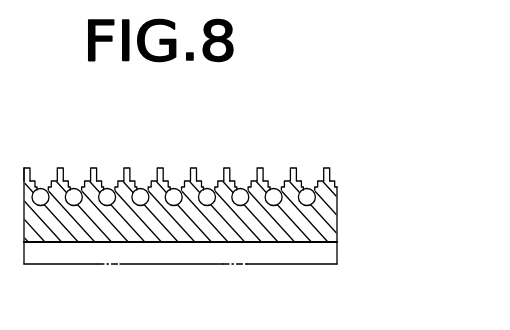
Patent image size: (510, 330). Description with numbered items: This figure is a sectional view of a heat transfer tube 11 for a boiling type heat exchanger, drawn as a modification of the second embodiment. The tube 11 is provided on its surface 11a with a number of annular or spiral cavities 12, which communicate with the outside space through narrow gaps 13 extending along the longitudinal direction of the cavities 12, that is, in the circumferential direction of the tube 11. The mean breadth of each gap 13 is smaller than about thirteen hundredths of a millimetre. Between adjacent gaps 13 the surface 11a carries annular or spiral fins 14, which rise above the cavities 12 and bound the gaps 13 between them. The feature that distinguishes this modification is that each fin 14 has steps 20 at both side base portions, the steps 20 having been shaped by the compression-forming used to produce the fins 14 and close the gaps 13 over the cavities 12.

The heat transfer tube 11 is at (55, 193).
The surface 11a is at (115, 186).
The cavities 12 is at (177, 201).
The narrow gaps 13 is at (172, 187).
The fins 14 is at (162, 171).
The steps 20 is at (293, 174).